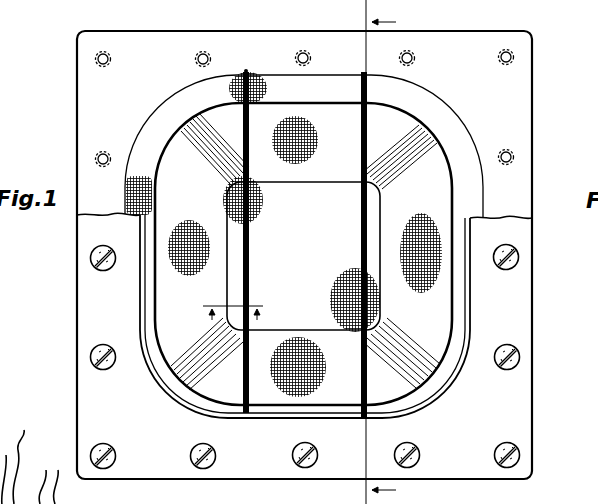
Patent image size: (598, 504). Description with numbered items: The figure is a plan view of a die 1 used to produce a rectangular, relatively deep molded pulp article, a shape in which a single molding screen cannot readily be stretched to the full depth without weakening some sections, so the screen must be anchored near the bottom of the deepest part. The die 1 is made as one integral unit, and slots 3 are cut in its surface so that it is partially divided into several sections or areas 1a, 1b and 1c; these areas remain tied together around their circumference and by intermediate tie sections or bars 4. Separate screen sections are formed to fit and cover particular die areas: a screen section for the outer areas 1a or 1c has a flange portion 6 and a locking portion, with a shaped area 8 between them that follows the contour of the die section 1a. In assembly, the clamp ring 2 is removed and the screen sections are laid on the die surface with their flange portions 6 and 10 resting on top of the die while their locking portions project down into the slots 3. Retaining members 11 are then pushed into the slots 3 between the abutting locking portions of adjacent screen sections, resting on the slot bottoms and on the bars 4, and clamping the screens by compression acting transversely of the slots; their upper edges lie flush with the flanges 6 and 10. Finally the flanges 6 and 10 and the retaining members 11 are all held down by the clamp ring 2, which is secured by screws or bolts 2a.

The die 1 is at (515, 120).
The die section 1a is at (162, 172).
The die section 1b is at (281, 115).
The die section 1c is at (405, 128).
The clamp ring 2 is at (513, 305).
The screws or bolts 2a is at (520, 359).
The slots 3 is at (240, 143).
The tie sections or bars 4 is at (291, 252).
The flange portion 6 is at (128, 193).
The shaped area 8 is at (188, 257).
The flange portion 10 is at (328, 88).
The retaining members 11 is at (247, 270).